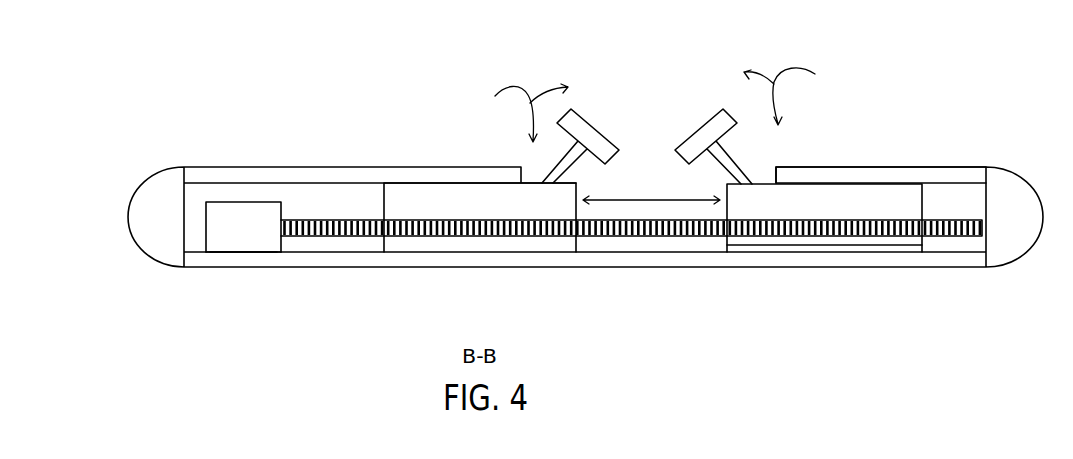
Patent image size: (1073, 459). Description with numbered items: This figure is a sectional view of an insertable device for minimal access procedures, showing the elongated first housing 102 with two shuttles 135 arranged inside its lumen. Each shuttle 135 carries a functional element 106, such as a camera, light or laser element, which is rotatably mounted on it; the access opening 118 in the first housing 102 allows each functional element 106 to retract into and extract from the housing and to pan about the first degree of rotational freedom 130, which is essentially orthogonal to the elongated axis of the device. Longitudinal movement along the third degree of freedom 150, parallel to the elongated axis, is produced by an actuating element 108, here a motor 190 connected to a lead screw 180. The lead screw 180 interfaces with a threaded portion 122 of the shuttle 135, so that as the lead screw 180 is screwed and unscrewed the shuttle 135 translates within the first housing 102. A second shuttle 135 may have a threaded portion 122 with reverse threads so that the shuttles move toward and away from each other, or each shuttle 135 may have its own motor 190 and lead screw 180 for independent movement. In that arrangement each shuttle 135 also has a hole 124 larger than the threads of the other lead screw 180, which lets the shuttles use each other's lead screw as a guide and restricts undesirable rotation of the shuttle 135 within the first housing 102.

The first housing 102 is at (858, 168).
The functional element 106 is at (722, 108).
The actuating element 108 is at (233, 240).
The access opening 118 is at (774, 168).
The threaded portion 122 is at (426, 220).
The hole 124 is at (913, 245).
The first degree of rotational freedom 130 is at (653, 102).
The shuttle 135 is at (520, 250).
The third degree of longitudinal freedom 150 is at (668, 201).
The lead screw 180 is at (360, 238).
The motor 190 is at (233, 240).